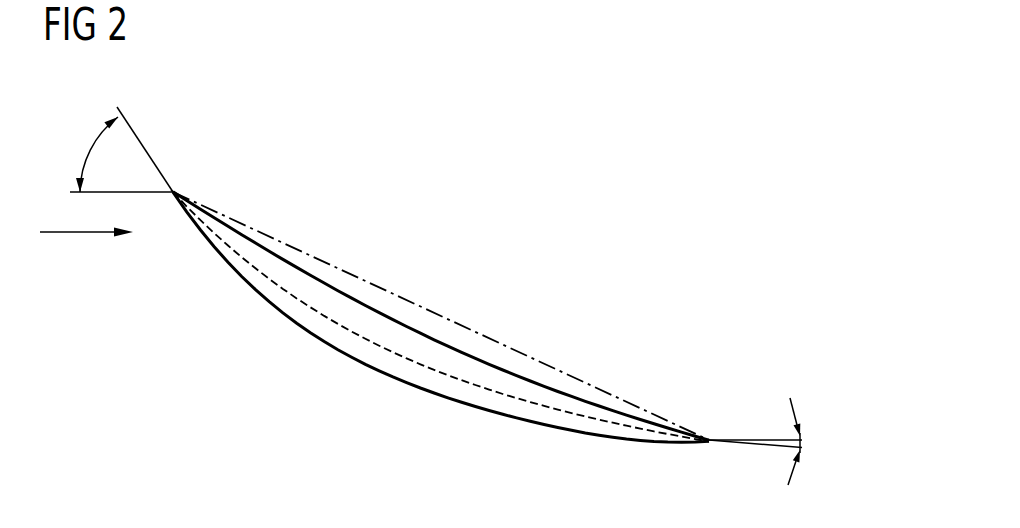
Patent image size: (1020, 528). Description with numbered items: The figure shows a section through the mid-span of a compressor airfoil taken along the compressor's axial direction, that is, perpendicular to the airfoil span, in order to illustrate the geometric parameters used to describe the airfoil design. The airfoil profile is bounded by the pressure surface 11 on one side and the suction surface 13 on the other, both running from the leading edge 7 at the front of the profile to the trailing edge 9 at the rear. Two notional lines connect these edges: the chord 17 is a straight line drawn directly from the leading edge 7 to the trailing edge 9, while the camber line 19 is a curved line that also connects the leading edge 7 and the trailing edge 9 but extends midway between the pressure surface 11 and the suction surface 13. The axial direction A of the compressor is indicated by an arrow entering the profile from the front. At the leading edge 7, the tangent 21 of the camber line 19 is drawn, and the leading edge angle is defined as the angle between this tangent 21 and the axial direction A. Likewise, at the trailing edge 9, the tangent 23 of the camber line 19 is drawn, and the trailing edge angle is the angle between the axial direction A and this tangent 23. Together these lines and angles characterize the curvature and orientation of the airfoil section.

The leading edge 7 is at (177, 188).
The trailing edge 9 is at (711, 438).
The pressure surface 11 is at (331, 291).
The suction surface 13 is at (311, 332).
The chord 17 is at (472, 330).
The camber line 19 is at (392, 353).
The tangent of the camber line at the leading edge 21 is at (136, 131).
The tangent of the camber line at the trailing edge 23 is at (768, 448).
The axial direction A is at (78, 233).